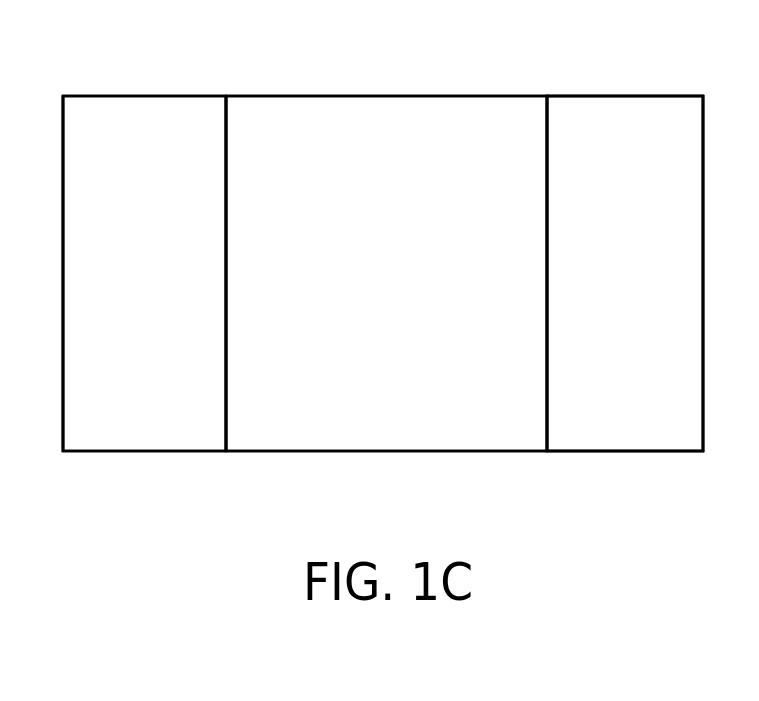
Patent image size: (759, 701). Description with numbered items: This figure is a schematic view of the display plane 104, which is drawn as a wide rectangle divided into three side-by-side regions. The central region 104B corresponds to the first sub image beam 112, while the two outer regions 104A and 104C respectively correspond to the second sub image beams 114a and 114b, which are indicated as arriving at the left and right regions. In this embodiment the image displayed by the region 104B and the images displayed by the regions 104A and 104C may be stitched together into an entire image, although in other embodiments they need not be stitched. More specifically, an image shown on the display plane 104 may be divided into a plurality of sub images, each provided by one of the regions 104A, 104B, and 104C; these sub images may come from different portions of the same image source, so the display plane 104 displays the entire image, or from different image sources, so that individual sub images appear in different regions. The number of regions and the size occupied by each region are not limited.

The display plane 104 is at (75, 94).
The region 104A is at (198, 118).
The region 104B is at (445, 118).
The region 104C is at (580, 118).
The first sub image beam 112 is at (372, 118).
The second sub image beam 114a is at (142, 118).
The second sub image beam 114b is at (682, 118).